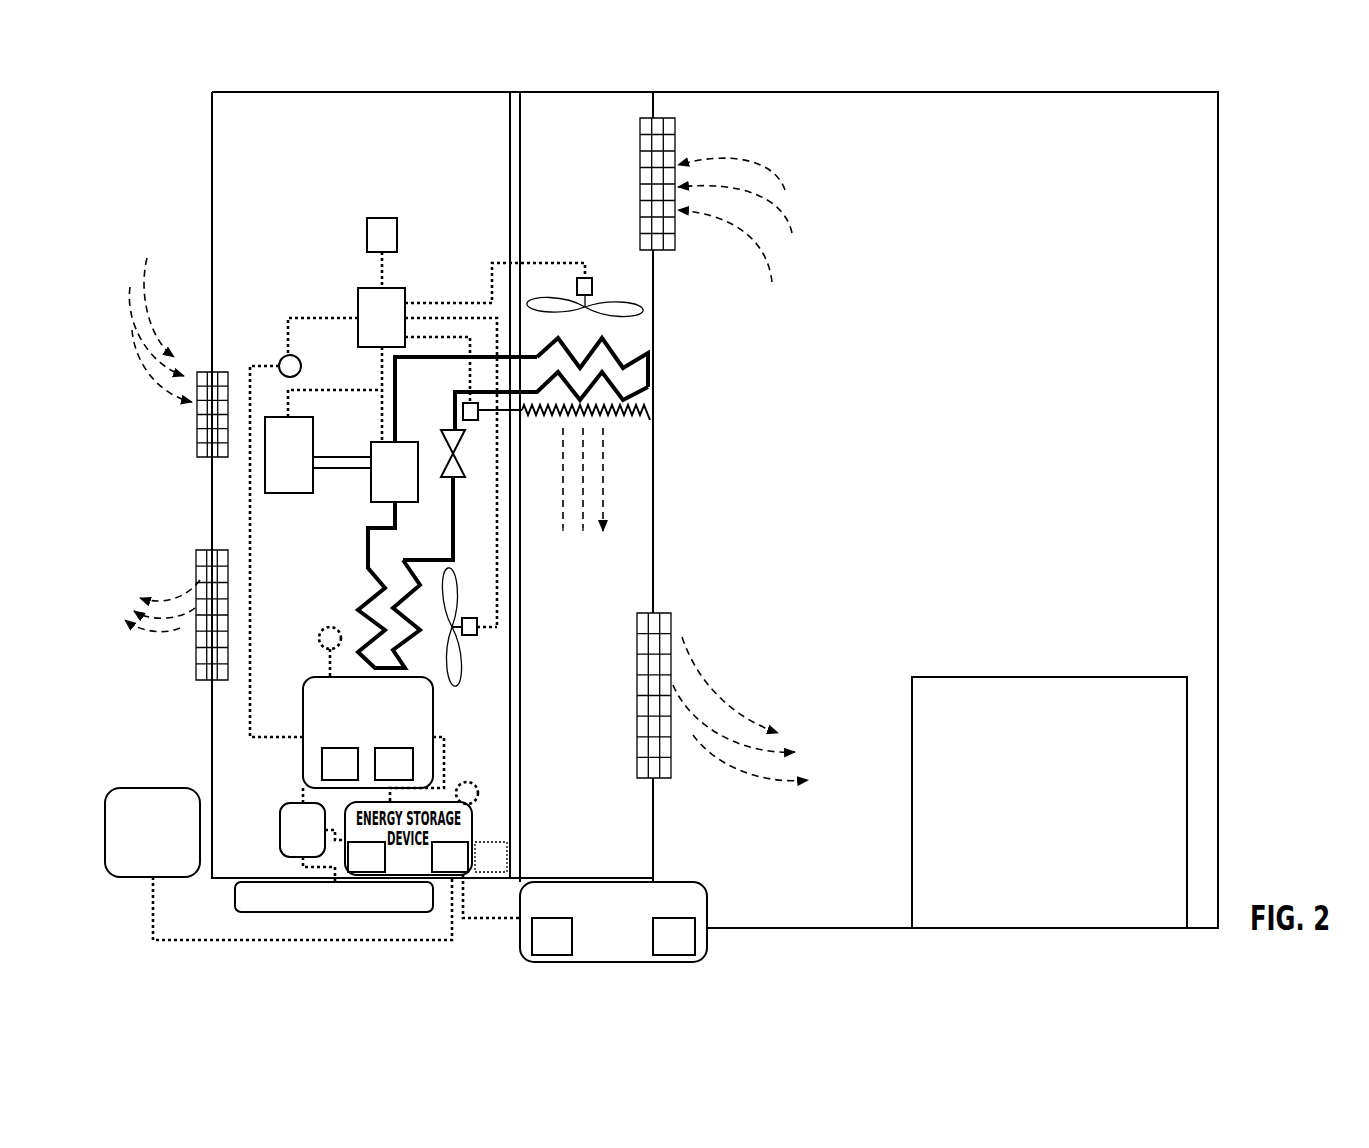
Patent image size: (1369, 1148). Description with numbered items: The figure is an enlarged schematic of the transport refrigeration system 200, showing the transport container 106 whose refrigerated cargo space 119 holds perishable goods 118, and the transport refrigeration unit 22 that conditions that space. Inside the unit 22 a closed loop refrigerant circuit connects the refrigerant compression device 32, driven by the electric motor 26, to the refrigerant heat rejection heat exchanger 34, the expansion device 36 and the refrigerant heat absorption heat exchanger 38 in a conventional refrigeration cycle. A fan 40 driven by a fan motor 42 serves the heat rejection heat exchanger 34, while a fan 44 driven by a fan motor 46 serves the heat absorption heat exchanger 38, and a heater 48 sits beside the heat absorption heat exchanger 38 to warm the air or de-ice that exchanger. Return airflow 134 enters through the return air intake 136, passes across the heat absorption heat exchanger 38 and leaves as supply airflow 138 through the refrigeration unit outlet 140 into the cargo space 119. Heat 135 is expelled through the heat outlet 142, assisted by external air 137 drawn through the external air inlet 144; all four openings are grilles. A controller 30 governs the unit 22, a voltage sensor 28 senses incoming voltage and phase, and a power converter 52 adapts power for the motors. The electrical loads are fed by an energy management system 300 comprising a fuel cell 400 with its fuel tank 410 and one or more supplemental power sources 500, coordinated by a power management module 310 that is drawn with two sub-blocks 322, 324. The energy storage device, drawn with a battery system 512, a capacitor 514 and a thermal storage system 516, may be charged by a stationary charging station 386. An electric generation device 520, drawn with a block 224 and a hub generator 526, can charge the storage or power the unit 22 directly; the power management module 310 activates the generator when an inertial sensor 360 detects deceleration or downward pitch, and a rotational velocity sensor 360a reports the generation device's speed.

The transport refrigeration system 200 is at (190, 113).
The transport container 106 is at (903, 93).
The refrigerated cargo space 119 is at (1042, 257).
The perishable goods 118 is at (978, 680).
The transport refrigeration unit 22 is at (212, 288).
The return air intake 136 is at (676, 134).
The return airflow 134 is at (762, 257).
The refrigeration unit outlet 140 is at (666, 626).
The supply airflow 138 is at (735, 672).
The external air inlet 144 is at (197, 450).
The external air 137 is at (135, 328).
The heat 135 is at (197, 640).
The heat outlet 142 is at (200, 607).
The energy management system 300 is at (133, 706).
The power converter 52 is at (358, 300).
The controller 30 is at (396, 243).
The voltage sensor 28 is at (298, 374).
The electric motor 26 is at (285, 493).
The refrigerant compression device 32 is at (371, 489).
The expansion device 36 is at (460, 475).
The refrigerant heat absorption heat exchanger 38 is at (650, 356).
The heater 48 is at (650, 410).
The refrigerant heat rejection heat exchanger 34 is at (370, 596).
The fan 44 is at (645, 309).
The fan motor 46 is at (577, 286).
The fan 40 is at (450, 678).
The fan motor 42 is at (470, 618).
The inertial sensor 360 is at (323, 628).
The power management module 310 is at (433, 752).
The power converter 322 is at (354, 777).
The power controller 324 is at (408, 777).
The rotational velocity sensor 360a is at (478, 793).
The charging station 386 is at (117, 858).
The fuel cell 400 is at (283, 803).
The fuel tank 410 is at (235, 885).
The battery system 512 is at (380, 870).
The capacitor 514 is at (464, 870).
The thermal storage system 516 is at (504, 870).
The supplemental power source 500 is at (728, 897).
The electric generation device 520 is at (654, 880).
The generator 224 is at (568, 950).
The hub generator 526 is at (690, 950).